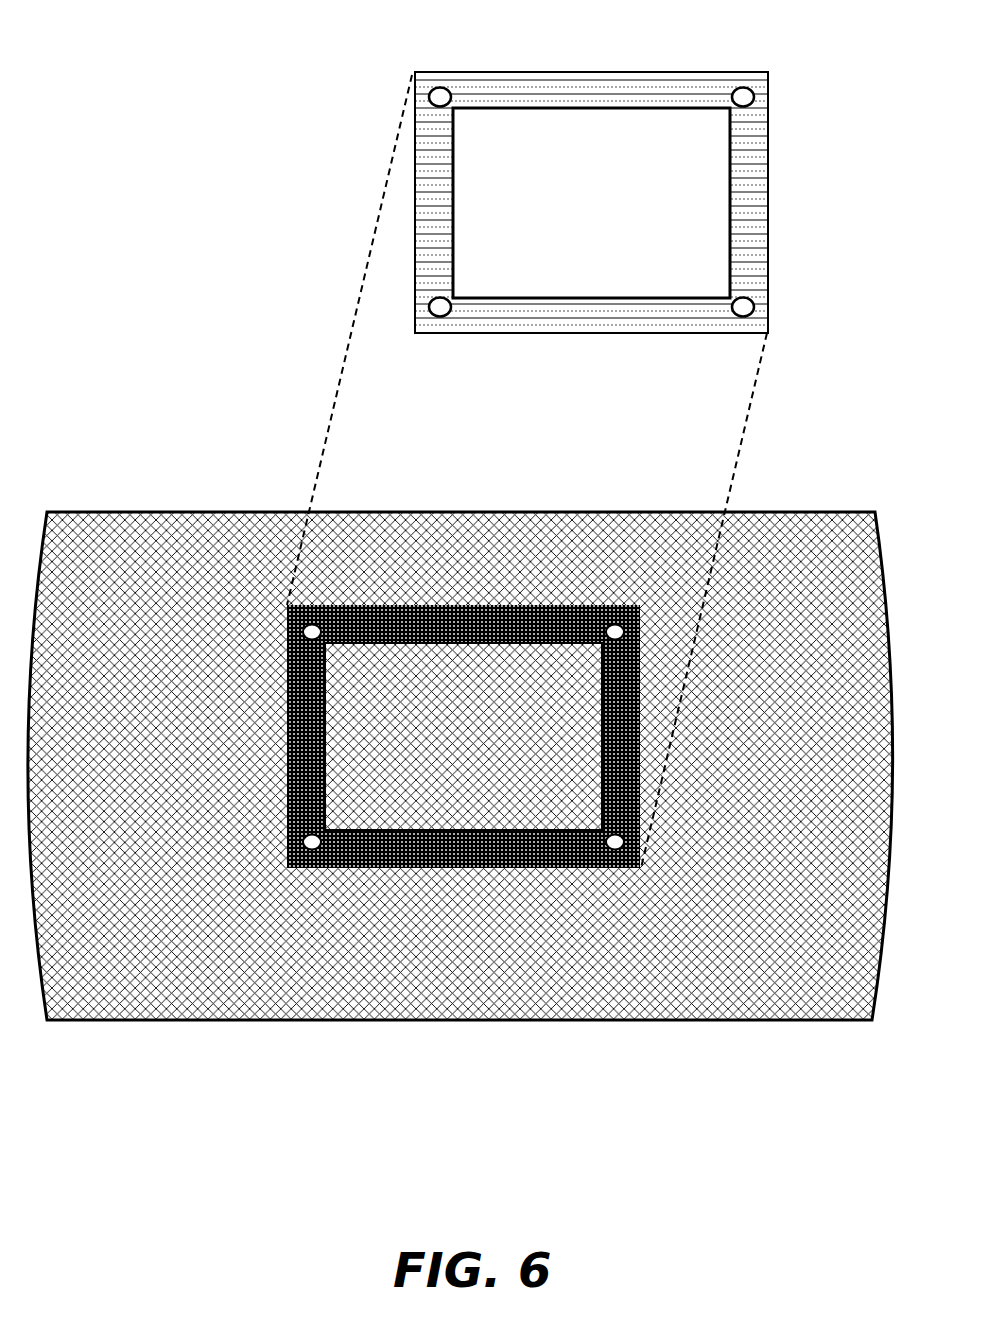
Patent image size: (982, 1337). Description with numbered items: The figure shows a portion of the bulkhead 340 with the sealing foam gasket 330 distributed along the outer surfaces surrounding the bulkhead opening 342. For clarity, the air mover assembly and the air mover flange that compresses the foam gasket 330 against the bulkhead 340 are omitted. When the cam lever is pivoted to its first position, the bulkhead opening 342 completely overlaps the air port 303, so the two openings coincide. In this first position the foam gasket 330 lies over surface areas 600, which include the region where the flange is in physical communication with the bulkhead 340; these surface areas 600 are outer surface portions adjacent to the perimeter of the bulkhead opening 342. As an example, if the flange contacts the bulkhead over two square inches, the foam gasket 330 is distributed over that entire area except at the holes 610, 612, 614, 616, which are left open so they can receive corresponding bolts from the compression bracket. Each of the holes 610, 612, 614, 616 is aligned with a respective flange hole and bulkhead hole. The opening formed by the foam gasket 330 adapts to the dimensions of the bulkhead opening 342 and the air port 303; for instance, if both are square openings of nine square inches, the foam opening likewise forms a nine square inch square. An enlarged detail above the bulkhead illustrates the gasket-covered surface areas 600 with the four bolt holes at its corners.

The surface areas 600 is at (505, 72).
The bulkhead 340 is at (156, 512).
The sealing foam gasket 330 is at (312, 755).
The air port 303 is at (463, 736).
The bulkhead opening 342 is at (437, 643).
The hole 610 is at (300, 626).
The hole 612 is at (605, 626).
The hole 614 is at (303, 850).
The hole 616 is at (606, 850).